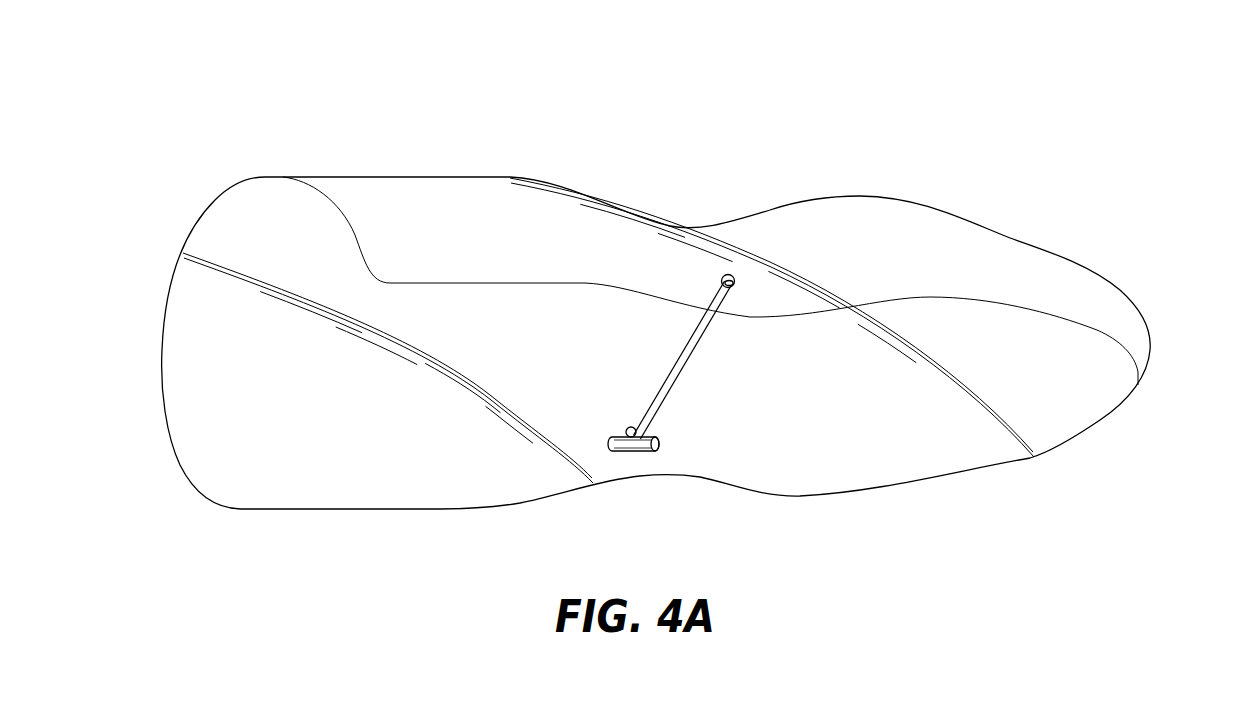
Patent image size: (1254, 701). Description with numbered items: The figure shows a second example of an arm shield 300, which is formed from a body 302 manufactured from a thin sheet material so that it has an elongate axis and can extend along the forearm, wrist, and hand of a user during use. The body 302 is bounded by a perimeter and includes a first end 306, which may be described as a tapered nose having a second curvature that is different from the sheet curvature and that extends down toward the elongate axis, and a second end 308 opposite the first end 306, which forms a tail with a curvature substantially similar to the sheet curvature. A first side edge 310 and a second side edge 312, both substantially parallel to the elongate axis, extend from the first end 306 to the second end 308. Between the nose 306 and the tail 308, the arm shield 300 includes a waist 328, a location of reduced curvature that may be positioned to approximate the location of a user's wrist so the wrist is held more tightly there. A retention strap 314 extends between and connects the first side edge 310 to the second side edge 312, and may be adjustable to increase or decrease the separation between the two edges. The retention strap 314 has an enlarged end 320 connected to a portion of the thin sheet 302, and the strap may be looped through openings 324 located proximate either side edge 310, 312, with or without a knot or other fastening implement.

The arm shield 300 is at (669, 303).
The body 302 is at (975, 247).
The first end 306 is at (1120, 318).
The second end 308 is at (210, 325).
The first side edge 310 is at (440, 510).
The second side edge 312 is at (500, 283).
The retention strap 314 is at (668, 385).
The end of retention strap 320 is at (625, 452).
The openings 324 is at (703, 275).
The waist 328 is at (699, 200).